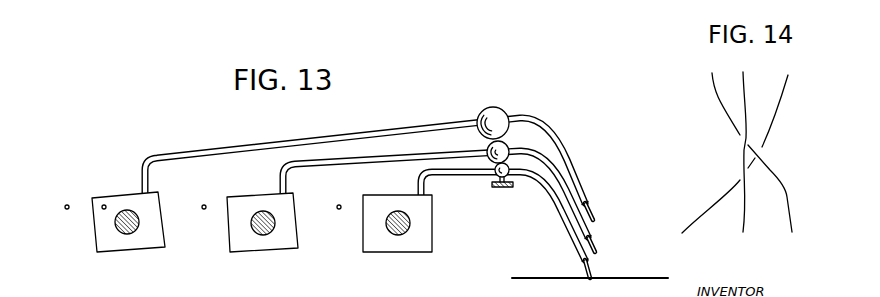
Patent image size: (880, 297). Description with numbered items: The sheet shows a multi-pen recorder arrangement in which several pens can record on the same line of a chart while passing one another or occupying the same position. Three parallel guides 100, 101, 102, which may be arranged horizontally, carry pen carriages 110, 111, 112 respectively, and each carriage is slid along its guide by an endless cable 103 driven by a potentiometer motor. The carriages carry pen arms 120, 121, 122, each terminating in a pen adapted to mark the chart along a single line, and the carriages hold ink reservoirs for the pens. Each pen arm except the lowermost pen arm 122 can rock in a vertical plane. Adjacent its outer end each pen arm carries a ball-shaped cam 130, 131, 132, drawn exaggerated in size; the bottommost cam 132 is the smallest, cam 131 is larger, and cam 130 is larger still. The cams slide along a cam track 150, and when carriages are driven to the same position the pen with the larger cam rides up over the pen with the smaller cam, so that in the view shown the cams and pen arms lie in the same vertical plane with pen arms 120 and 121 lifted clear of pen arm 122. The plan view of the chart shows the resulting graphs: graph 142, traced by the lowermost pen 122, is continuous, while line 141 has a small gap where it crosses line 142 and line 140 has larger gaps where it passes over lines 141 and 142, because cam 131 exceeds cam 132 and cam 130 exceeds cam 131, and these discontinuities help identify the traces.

In FIG. 13, the guide 100 is at (116, 222).
In FIG. 13, the guide 101 is at (252, 223).
In FIG. 13, the guide 102 is at (387, 223).
In FIG. 13, the endless cable 103 is at (103, 206).
In FIG. 13, the pen carriage 110 is at (128, 238).
In FIG. 13, the pen carriage 111 is at (264, 239).
In FIG. 13, the pen carriage 112 is at (392, 239).
In FIG. 13, the pen arm 120 is at (238, 146).
In FIG. 13, the pen arm 121 is at (407, 157).
In FIG. 13, the pen arm 122 is at (450, 173).
In FIG. 13, the cam 130 is at (499, 110).
In FIG. 13, the cam 131 is at (508, 147).
In FIG. 13, the cam 132 is at (510, 167).
In FIG. 13, the cam track 150 is at (507, 188).
In FIG. 14, the line 140 is at (778, 113).
In FIG. 14, the line 141 is at (715, 87).
In FIG. 14, the graph 142 is at (743, 82).